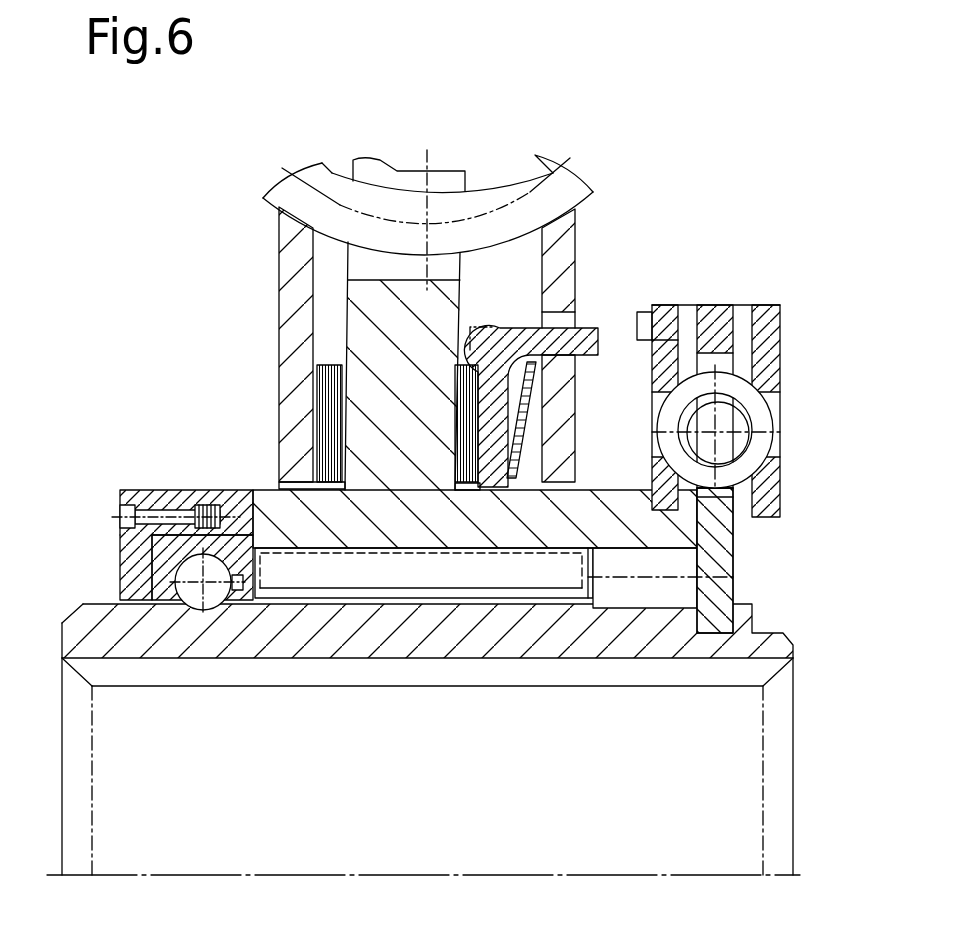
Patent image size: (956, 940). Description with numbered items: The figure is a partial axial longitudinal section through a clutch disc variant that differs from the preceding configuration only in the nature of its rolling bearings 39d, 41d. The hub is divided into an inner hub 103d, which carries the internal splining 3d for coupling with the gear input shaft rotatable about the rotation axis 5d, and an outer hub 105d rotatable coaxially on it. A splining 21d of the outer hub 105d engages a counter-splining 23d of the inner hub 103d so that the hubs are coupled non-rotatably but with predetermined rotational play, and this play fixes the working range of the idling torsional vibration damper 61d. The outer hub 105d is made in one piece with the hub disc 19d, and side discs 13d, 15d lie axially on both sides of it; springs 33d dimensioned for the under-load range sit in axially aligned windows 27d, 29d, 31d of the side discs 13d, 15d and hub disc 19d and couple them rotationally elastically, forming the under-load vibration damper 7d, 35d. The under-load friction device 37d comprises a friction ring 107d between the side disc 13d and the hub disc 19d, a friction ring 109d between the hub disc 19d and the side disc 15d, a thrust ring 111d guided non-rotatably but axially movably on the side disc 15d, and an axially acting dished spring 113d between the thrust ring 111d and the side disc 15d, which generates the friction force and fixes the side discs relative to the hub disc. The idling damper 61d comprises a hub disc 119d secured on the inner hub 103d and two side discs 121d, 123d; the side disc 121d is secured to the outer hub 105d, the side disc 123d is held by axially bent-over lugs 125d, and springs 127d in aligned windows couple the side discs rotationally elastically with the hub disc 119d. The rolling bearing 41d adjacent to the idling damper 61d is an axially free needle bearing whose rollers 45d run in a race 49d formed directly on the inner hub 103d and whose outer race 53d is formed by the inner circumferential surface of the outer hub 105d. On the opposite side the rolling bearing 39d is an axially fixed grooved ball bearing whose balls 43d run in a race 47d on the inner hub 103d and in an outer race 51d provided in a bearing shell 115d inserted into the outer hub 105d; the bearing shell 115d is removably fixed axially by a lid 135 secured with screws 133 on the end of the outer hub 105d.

The under-load vibration damper 7d is at (430, 171).
The under-load vibration damper 35d is at (277, 172).
The springs 33d is at (333, 176).
The window of the hub disc 31d is at (453, 170).
The window of the side disc 27d is at (290, 226).
The window of the side disc 29d is at (577, 212).
The side disc 13d is at (280, 236).
The side disc 15d is at (567, 247).
The hub disc 19d is at (355, 302).
The under-load friction device 37d is at (306, 406).
The friction ring 107d is at (313, 380).
The friction ring 109d is at (455, 395).
The thrust ring 111d is at (495, 382).
The dished spring 113d is at (533, 412).
The outer hub 105d is at (252, 497).
The outer race 51d is at (436, 473).
The bearing shell 115d is at (182, 582).
The screws 133 is at (112, 533).
The rolling bearing 39d is at (130, 531).
The lid 135 is at (120, 565).
The inner hub 103d is at (83, 617).
The race 47d is at (186, 604).
The balls 43d is at (213, 598).
The internal splining 3d is at (398, 726).
The counter-splining 23d is at (470, 593).
The splining 21d is at (424, 638).
The race 49d is at (622, 617).
The rotation axis 5d is at (800, 875).
The side disc 121d is at (670, 312).
The lugs 125d is at (740, 312).
The side disc 123d is at (763, 327).
The idling torsional vibration damper 61d is at (749, 367).
The springs 127d is at (760, 443).
The outer race 53d is at (737, 505).
The hub disc 119d is at (723, 537).
The rollers 45d is at (712, 578).
The rolling bearing 41d is at (715, 556).